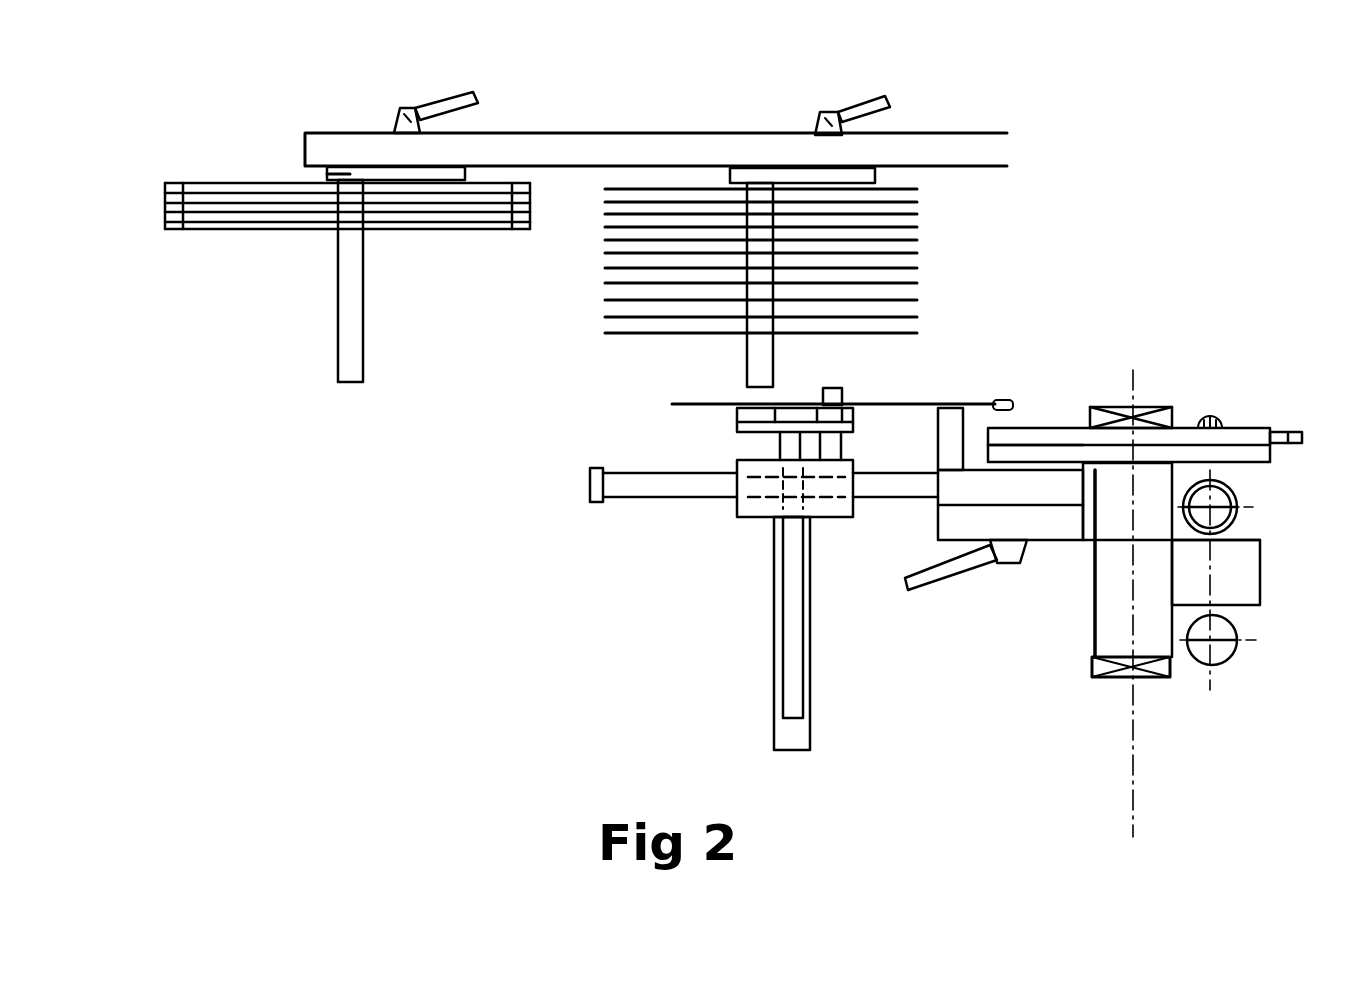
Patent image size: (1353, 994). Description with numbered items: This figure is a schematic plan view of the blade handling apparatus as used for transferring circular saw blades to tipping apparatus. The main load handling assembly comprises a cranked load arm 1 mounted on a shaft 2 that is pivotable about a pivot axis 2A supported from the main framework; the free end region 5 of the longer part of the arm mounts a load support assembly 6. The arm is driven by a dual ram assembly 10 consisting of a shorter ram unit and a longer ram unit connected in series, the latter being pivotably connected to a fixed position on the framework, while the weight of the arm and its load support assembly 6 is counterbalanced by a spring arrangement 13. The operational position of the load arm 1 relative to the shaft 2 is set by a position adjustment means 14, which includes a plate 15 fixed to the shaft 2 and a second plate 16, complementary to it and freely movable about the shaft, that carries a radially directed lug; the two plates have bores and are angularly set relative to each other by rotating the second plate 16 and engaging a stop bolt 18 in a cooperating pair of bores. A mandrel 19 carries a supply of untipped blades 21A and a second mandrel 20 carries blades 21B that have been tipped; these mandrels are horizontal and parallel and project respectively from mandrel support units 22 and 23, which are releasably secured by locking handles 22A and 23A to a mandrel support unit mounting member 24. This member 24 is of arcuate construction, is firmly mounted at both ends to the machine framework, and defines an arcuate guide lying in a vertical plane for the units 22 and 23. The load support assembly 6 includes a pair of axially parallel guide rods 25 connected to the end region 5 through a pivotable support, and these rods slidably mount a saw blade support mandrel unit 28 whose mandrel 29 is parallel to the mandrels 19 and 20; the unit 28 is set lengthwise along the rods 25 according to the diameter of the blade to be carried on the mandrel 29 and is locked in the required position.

The load arm 1 is at (1107, 623).
The shaft 2 is at (1167, 680).
The pivot axis 2A is at (1132, 782).
The free end region 5 is at (1035, 523).
The load support assembly 6 is at (910, 487).
The dual ram assembly 10 is at (1222, 650).
The spring arrangement 13 is at (1217, 490).
The position adjustment means 14 is at (1250, 415).
The plate 15 is at (1183, 437).
The second plate 16 is at (1023, 453).
The stop bolt 18 is at (1203, 417).
The mandrel 19 is at (760, 372).
The second mandrel 20 is at (348, 322).
The untipped blades 21A is at (910, 253).
The tipped blades 21B is at (520, 227).
The mandrel support unit 22 is at (853, 175).
The locking handle 22A is at (820, 112).
The mandrel support unit 23 is at (327, 173).
The locking handle 23A is at (400, 108).
The mandrel support unit mounting member 24 is at (563, 153).
The guide rods 25 is at (680, 483).
The saw blade support mandrel unit 28 is at (755, 520).
The mandrel 29 is at (835, 395).